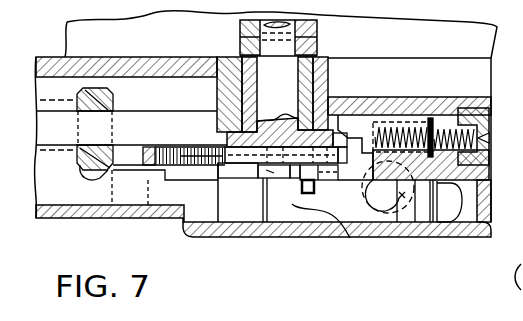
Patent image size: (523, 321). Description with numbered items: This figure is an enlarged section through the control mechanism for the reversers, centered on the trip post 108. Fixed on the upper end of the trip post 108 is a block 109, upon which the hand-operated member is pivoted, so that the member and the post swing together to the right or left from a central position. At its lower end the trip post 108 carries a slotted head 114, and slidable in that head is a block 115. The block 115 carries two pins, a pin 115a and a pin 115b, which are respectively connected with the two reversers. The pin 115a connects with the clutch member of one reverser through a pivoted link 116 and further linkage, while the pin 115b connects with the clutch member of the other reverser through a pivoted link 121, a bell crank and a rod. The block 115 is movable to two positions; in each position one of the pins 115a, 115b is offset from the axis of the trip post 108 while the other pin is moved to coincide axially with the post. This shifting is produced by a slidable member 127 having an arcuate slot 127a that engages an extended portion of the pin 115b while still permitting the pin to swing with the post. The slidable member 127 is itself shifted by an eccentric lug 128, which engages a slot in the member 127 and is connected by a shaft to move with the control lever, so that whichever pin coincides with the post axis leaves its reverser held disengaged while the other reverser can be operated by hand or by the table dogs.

The trip post 108 is at (284, 93).
The block 109 is at (317, 22).
The slotted head 114 is at (226, 134).
The block 115 is at (253, 150).
The pin 115a is at (260, 166).
The pin 115b is at (308, 186).
The pivoted link 116 is at (258, 170).
The pivoted link 121 is at (323, 176).
The slidable member 127 is at (341, 243).
The arcuate slot 127a is at (330, 216).
The eccentric lug 128 is at (455, 196).